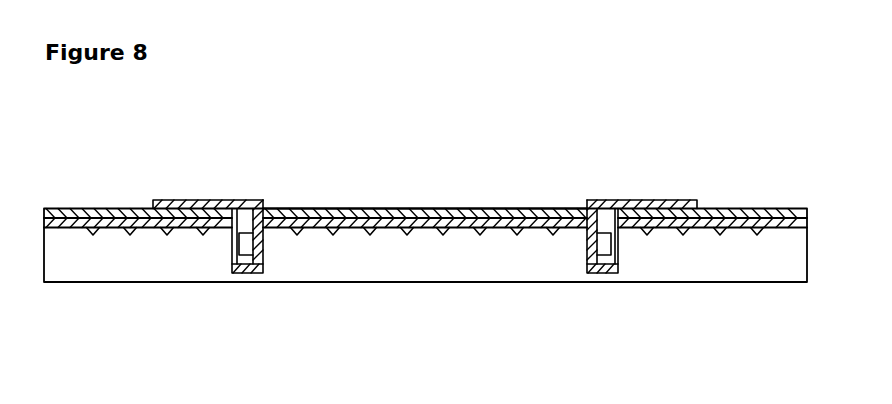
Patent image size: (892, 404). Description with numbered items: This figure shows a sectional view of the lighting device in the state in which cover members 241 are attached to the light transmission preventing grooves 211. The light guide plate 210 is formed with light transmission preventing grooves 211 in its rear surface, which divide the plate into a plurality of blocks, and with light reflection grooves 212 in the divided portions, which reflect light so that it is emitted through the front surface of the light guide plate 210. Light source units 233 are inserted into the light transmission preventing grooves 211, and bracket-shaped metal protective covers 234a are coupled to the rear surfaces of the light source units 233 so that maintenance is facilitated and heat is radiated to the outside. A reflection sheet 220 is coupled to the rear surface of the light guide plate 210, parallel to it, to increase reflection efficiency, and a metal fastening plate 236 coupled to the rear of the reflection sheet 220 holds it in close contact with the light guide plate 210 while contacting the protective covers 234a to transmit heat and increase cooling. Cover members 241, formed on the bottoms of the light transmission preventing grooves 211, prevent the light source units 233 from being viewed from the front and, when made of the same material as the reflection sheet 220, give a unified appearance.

The light guide plate 210 is at (752, 272).
The reflection sheet 220 is at (753, 210).
The fastening plate 236 is at (425, 208).
The light reflection grooves 212 is at (441, 230).
The protective covers 234a is at (210, 200).
The light transmission preventing grooves 211 is at (242, 222).
The cover members 241 is at (252, 273).
The light source units 233 is at (243, 245).